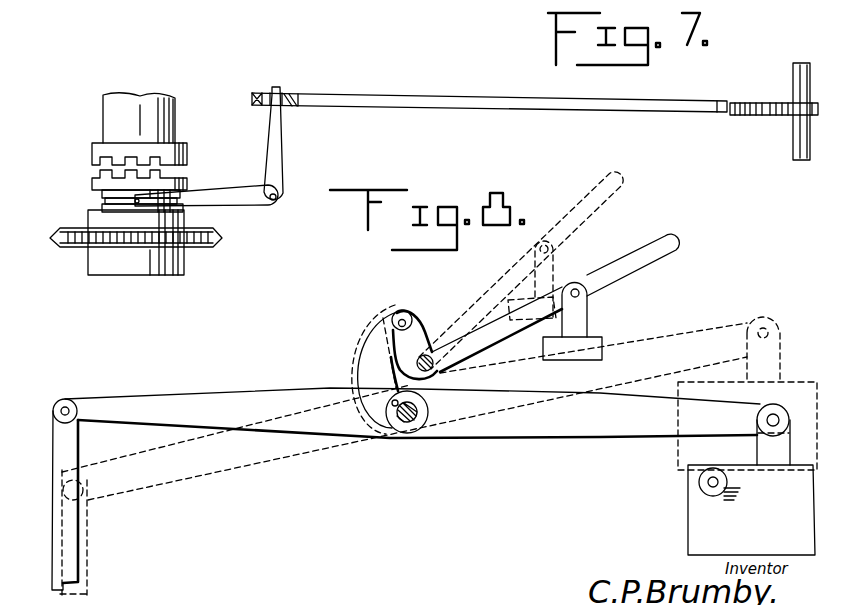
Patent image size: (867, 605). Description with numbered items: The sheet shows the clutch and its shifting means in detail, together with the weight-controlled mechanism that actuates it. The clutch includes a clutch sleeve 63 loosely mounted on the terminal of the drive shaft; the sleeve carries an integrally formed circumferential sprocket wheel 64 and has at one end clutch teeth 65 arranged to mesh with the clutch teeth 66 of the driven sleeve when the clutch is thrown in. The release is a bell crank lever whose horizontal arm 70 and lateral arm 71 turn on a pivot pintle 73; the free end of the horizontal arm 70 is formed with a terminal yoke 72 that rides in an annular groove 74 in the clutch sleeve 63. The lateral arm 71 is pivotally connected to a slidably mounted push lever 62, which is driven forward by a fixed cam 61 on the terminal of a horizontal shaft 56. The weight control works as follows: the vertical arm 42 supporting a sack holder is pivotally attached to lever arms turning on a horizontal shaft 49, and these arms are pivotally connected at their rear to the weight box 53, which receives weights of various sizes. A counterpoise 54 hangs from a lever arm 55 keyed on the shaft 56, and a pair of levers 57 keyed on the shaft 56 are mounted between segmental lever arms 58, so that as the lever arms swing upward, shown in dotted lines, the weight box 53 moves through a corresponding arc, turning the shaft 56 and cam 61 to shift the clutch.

In FIG. 8, the vertical arm 42 is at (63, 545).
In FIG. 8, the horizontal shaft 49 is at (407, 422).
In FIG. 8, the weight box 53 is at (700, 515).
In FIG. 8, the counterpoise 54 is at (573, 353).
In FIG. 8, the lever arm 55 is at (616, 265).
In FIG. 8, the horizontal shaft 56 is at (429, 354).
In FIG. 8, the lever 57 is at (410, 317).
In FIG. 7, the segmental lever arm 58 is at (800, 162).
In FIG. 7, the cam 61 is at (745, 117).
In FIG. 7, the push lever 62 is at (495, 101).
In FIG. 7, the clutch sleeve 63 is at (168, 275).
In FIG. 7, the sprocket wheel 64 is at (205, 246).
In FIG. 7, the clutch teeth 65 is at (100, 173).
In FIG. 7, the clutch teeth 66 is at (186, 151).
In FIG. 7, the horizontal arm 70 is at (244, 200).
In FIG. 7, the lateral arm 71 is at (276, 161).
In FIG. 7, the terminal yoke 72 is at (190, 201).
In FIG. 7, the pivot pintle 73 is at (281, 205).
In FIG. 7, the annular groove 74 is at (105, 207).